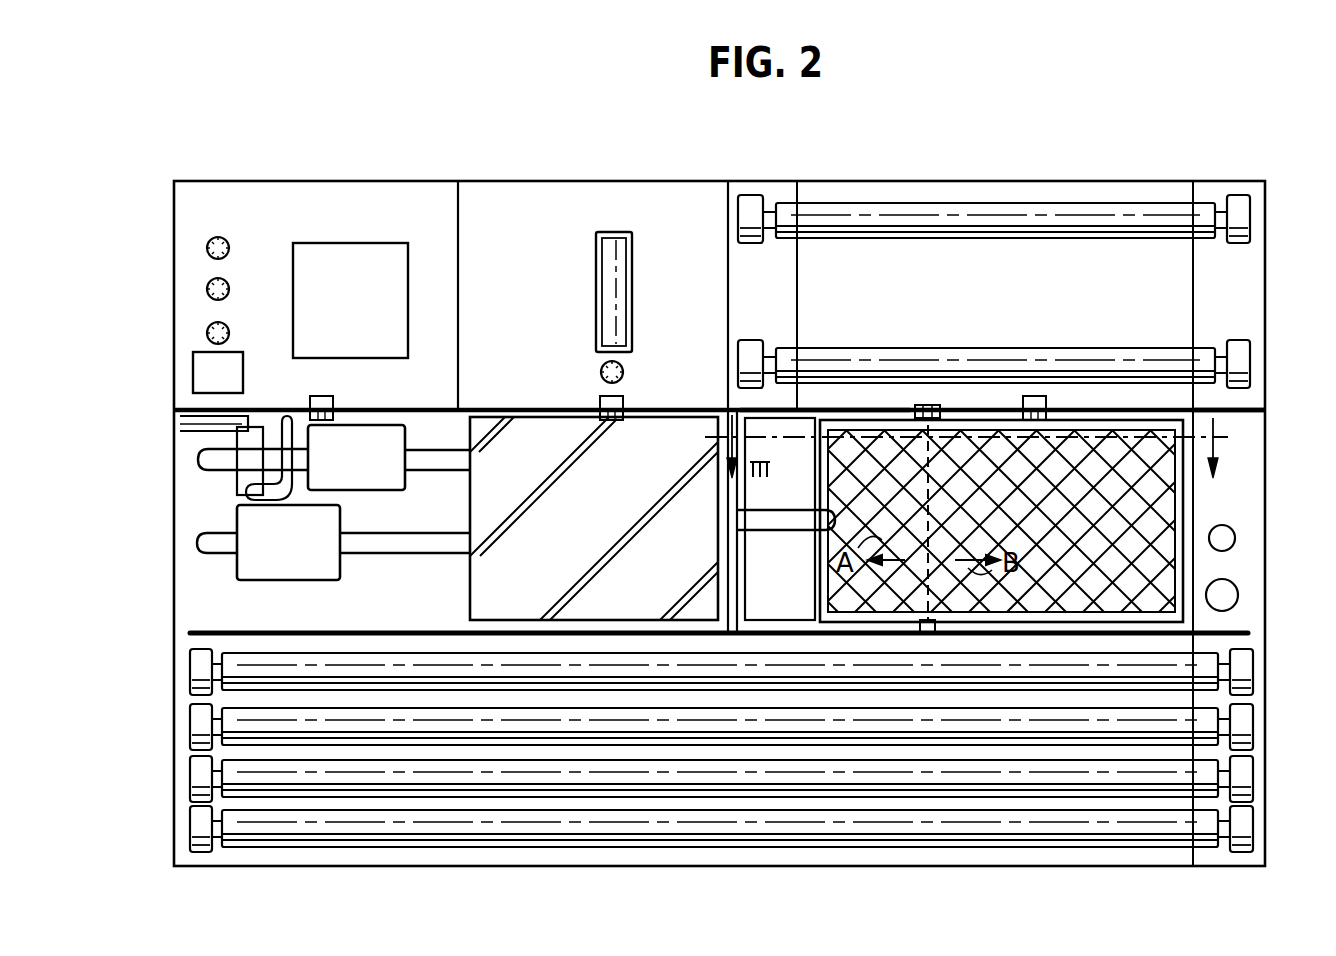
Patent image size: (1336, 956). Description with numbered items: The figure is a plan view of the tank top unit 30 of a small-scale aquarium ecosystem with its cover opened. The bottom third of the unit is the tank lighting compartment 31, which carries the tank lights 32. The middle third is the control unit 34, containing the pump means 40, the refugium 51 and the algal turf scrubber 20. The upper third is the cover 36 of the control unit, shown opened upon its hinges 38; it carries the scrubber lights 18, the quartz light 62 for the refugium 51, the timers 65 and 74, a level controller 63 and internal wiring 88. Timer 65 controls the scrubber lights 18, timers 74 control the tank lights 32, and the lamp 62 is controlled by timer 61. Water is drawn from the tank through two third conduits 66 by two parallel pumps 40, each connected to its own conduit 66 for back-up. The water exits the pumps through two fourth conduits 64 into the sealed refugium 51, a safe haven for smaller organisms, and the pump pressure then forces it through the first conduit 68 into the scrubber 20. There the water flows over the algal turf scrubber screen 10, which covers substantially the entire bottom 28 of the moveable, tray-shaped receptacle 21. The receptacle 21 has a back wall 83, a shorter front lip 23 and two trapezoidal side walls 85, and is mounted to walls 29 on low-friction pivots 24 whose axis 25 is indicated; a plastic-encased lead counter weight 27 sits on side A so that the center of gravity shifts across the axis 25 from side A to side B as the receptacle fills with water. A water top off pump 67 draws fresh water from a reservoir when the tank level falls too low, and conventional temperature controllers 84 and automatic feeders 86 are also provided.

The algal turf scrubber screen 10 is at (1078, 404).
The scrubber lights 18 is at (1178, 240).
The algal turf scrubber 20 is at (1200, 508).
The tray-shaped receptacle 21 is at (1255, 404).
The front wall or lip 23 is at (1228, 437).
The pivots 24 is at (924, 404).
The axis of pivots 25 is at (936, 455).
The lead counter weight 27 is at (761, 590).
The bottom surface of receptacle 28 is at (1088, 561).
The walls 29 is at (968, 404).
The tank top unit 30 is at (170, 500).
The tank lighting compartment 31 is at (168, 686).
The tank lights 32 is at (340, 722).
The control unit 34 is at (170, 540).
The cover of the control unit 36 is at (170, 312).
The hinges 38 is at (332, 398).
The pump means 40 is at (339, 473).
The refugium 51 is at (573, 540).
The timer 61 is at (624, 372).
The quartz light 62 is at (614, 290).
The level controller 63 is at (332, 307).
The fourth conduits 64 is at (440, 456).
The timer 65 is at (226, 239).
The third conduits 66 is at (196, 460).
The water top off pump 67 is at (182, 428).
The first conduit 68 is at (780, 520).
The timers 74 is at (229, 290).
The back wall 83 is at (812, 460).
The temperature controllers 84 is at (1230, 538).
The side walls 85 is at (853, 404).
The automatic feeders 86 is at (1232, 594).
The internal wiring 88 is at (201, 387).